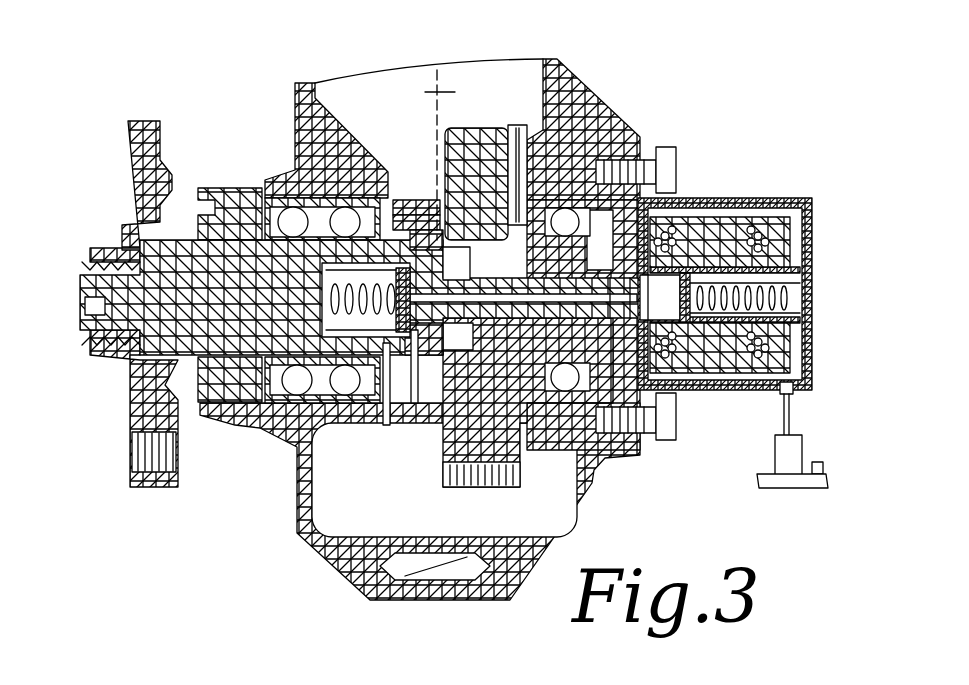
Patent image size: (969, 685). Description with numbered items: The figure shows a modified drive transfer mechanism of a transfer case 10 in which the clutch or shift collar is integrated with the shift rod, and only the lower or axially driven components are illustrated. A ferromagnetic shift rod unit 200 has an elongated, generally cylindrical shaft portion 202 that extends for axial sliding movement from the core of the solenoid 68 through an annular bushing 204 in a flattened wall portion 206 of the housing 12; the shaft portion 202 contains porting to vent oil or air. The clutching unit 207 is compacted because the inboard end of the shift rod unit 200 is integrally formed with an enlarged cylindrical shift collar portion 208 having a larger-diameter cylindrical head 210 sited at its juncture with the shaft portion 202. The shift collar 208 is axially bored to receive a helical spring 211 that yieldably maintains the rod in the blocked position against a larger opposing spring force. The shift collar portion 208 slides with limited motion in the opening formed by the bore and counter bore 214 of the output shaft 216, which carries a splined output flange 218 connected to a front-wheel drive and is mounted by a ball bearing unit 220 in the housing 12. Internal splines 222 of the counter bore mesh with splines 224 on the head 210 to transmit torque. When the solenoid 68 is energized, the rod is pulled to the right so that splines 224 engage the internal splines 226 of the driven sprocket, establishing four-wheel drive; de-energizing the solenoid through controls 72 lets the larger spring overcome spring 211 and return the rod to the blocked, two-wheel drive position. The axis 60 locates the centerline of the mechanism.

The transfer case 10 is at (604, 84).
The housing 12 is at (420, 326).
The axis 60 is at (422, 92).
The solenoid 68 is at (767, 222).
The controls 72 is at (790, 492).
The ferromagnetic shift rod unit 200 is at (508, 326).
The shaft portion 202 is at (502, 290).
The annular bushing 204 is at (680, 268).
The flattened wall portion 206 is at (672, 350).
The clutching unit 207 is at (385, 355).
The shift collar portion 208 is at (413, 335).
The cylindrical head 210 is at (441, 337).
The helical spring 211 is at (331, 299).
The counter bore 214 is at (397, 200).
The output shaft 216 is at (262, 265).
The output flange 218 is at (158, 140).
The ball bearing unit 220 is at (293, 207).
The internal splines 222 is at (425, 247).
The meshing splines 224 is at (417, 215).
The internal splines of the driven sprocket 226 is at (462, 235).